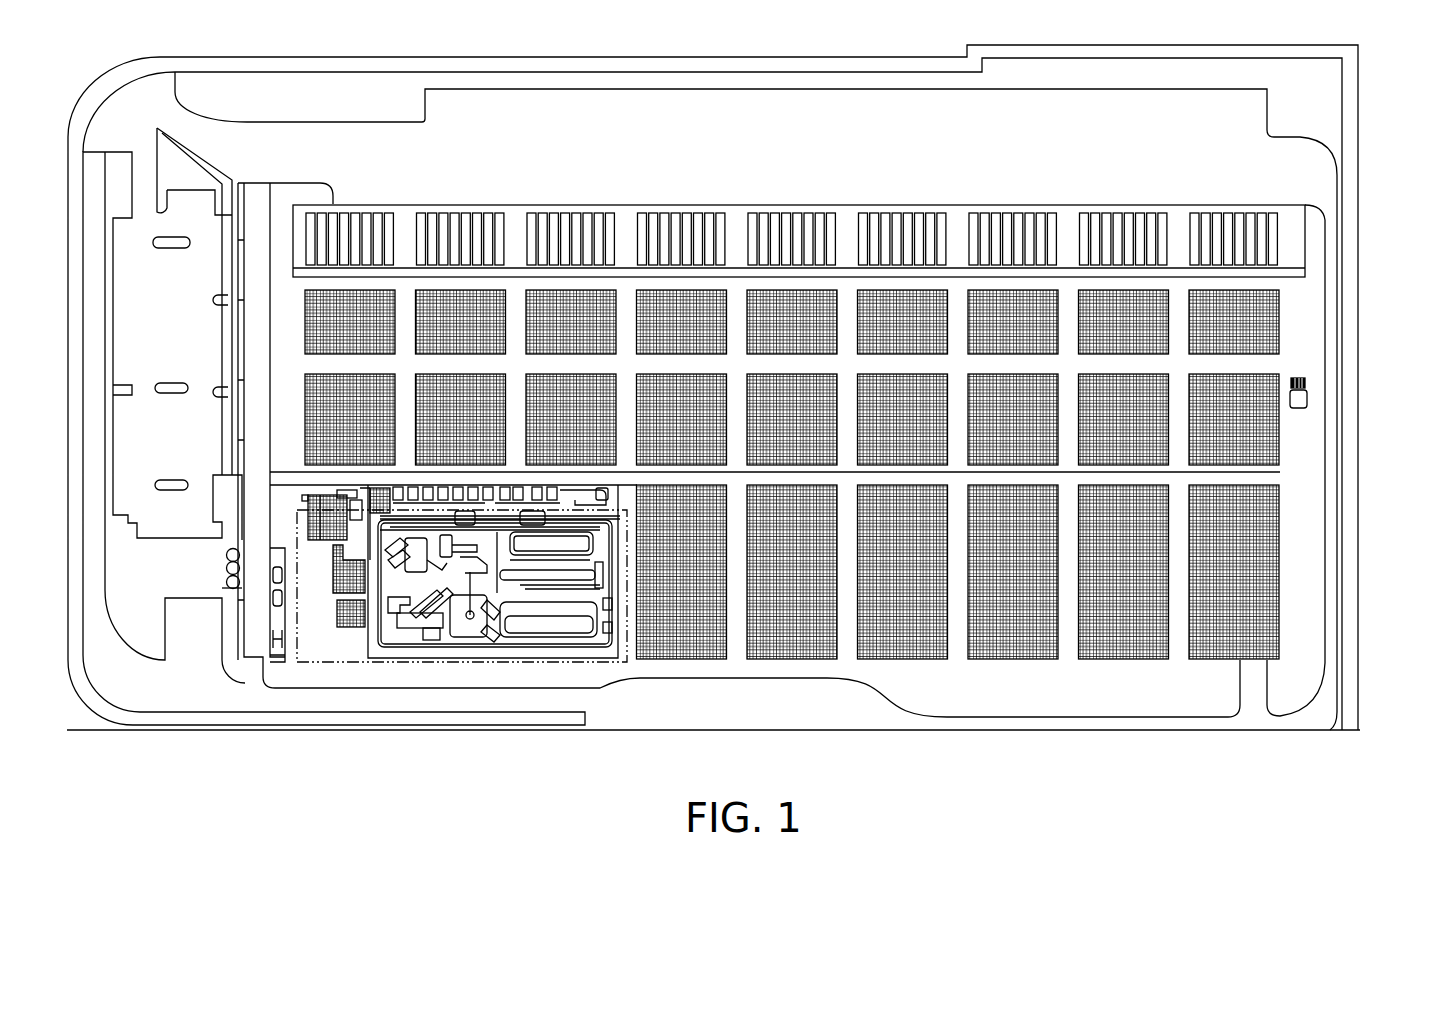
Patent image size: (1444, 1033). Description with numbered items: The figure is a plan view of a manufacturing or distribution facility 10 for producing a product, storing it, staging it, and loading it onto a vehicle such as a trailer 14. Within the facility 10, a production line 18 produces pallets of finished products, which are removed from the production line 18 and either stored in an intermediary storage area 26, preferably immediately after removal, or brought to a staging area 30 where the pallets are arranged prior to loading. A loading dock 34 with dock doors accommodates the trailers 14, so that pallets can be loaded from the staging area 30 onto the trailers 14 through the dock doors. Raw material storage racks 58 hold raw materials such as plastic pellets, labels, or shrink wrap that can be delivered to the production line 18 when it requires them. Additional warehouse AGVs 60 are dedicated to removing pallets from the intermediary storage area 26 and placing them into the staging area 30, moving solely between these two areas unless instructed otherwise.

The facility 10 is at (1368, 229).
The trailer 14 is at (1277, 218).
The loading dock 34 is at (1297, 219).
The staging area 30 is at (1265, 328).
The intermediary storage area 26 is at (1265, 553).
The raw material storage racks 58 is at (777, 647).
The additional warehouse AGV 60 is at (1303, 397).
The production line 18 is at (403, 637).